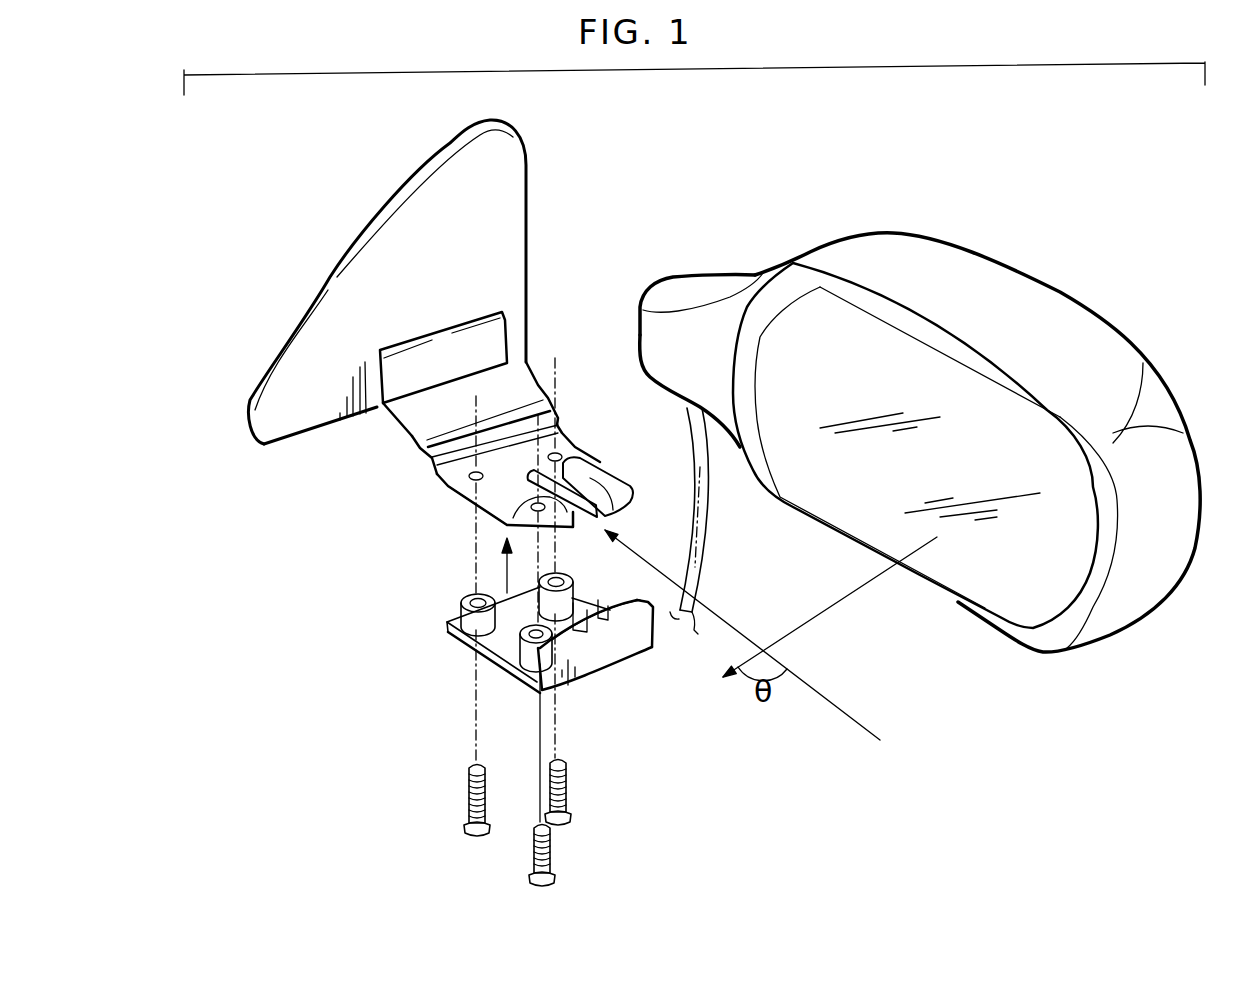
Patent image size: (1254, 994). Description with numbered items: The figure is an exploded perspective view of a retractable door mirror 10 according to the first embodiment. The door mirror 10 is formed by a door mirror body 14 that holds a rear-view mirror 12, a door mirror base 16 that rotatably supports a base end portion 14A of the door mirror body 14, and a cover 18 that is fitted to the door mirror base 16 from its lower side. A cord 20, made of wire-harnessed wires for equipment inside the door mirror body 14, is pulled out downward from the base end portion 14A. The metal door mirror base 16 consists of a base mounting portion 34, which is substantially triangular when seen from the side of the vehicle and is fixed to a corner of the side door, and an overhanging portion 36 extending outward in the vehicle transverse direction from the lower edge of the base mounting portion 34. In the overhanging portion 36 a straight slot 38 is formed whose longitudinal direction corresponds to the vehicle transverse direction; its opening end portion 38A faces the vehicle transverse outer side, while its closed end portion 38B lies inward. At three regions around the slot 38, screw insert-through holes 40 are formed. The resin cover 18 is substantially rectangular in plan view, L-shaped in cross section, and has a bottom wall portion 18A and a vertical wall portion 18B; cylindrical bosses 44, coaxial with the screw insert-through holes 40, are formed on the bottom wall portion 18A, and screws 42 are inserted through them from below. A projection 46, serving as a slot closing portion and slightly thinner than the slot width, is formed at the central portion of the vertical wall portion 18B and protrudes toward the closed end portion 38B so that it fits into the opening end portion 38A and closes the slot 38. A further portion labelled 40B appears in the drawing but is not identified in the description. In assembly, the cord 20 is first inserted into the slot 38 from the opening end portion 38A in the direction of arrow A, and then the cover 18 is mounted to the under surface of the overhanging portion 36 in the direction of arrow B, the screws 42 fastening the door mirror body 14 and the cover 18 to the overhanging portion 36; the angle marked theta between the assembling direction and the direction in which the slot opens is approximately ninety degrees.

The retractable door mirror 10 is at (794, 187).
The rear-view mirror 12 is at (960, 577).
The door mirror body 14 is at (1000, 262).
The base end portion 14A is at (668, 297).
The door mirror base 16 is at (283, 590).
The cover 18 is at (627, 668).
The bottom wall portion 18A is at (478, 647).
The vertical wall portion 18B is at (585, 672).
The cord 20 is at (703, 567).
The base mounting portion 34 is at (250, 441).
The overhanging portion 36 is at (418, 458).
The slot 38 is at (557, 431).
The opening end portion 38A is at (630, 438).
The closed end portion 38B is at (508, 526).
The screw insert-through holes 40 is at (560, 453).
The bracket bottom portion 40B is at (507, 560).
The screws 42 is at (470, 797).
The cylindrical bosses 44 is at (458, 613).
The projection 46 is at (632, 665).
The arrow A is at (638, 558).
The arrow B is at (507, 565).